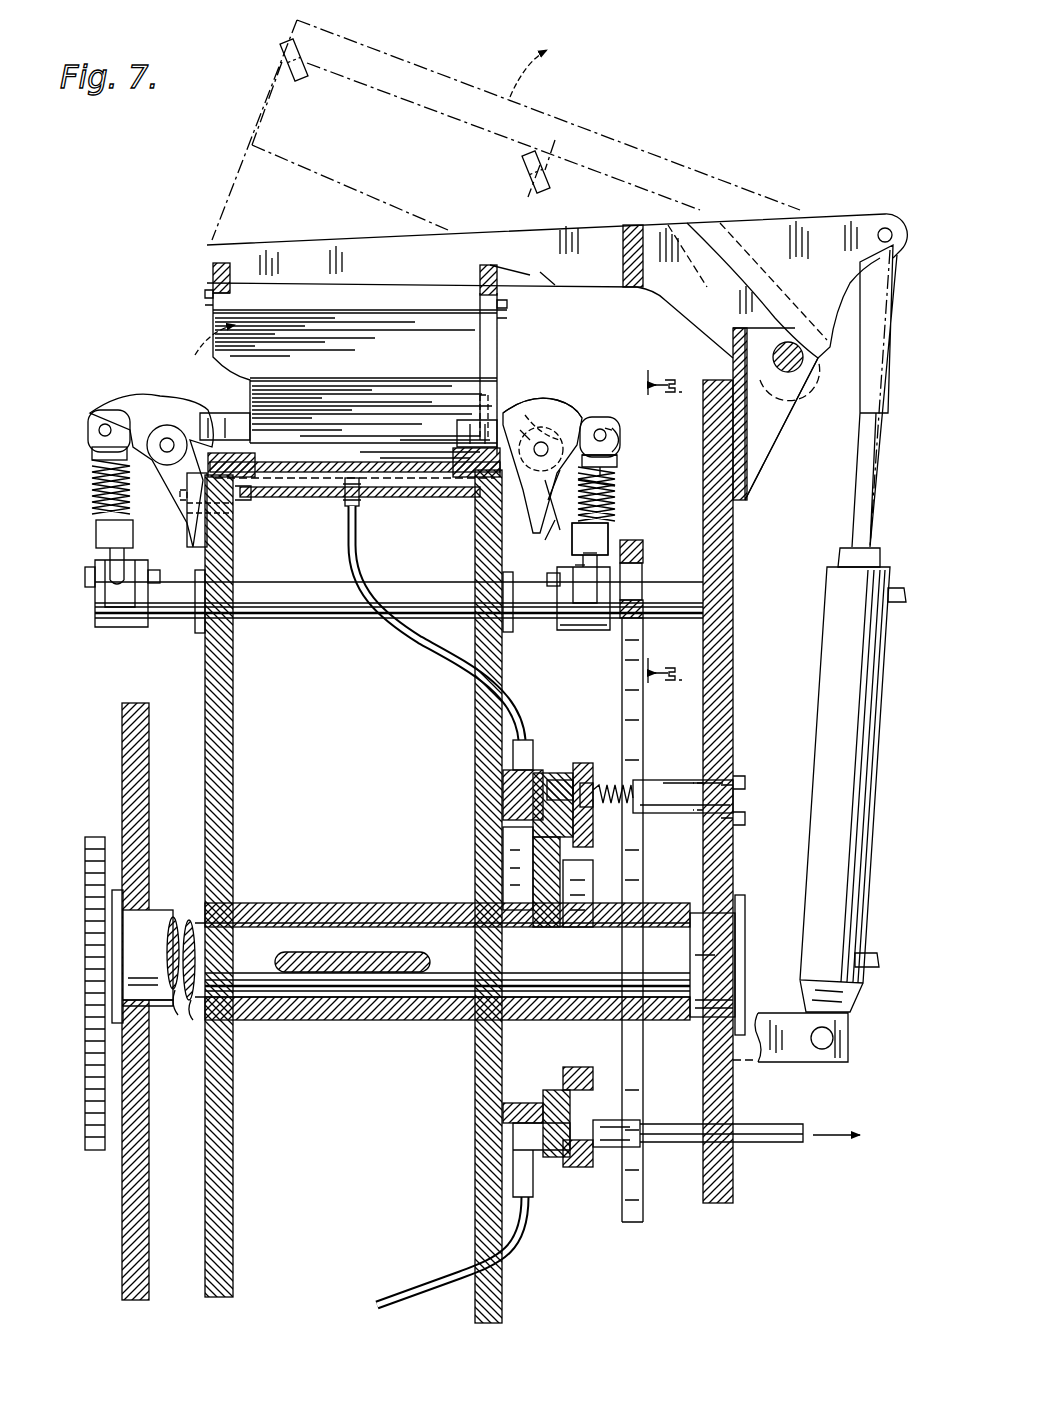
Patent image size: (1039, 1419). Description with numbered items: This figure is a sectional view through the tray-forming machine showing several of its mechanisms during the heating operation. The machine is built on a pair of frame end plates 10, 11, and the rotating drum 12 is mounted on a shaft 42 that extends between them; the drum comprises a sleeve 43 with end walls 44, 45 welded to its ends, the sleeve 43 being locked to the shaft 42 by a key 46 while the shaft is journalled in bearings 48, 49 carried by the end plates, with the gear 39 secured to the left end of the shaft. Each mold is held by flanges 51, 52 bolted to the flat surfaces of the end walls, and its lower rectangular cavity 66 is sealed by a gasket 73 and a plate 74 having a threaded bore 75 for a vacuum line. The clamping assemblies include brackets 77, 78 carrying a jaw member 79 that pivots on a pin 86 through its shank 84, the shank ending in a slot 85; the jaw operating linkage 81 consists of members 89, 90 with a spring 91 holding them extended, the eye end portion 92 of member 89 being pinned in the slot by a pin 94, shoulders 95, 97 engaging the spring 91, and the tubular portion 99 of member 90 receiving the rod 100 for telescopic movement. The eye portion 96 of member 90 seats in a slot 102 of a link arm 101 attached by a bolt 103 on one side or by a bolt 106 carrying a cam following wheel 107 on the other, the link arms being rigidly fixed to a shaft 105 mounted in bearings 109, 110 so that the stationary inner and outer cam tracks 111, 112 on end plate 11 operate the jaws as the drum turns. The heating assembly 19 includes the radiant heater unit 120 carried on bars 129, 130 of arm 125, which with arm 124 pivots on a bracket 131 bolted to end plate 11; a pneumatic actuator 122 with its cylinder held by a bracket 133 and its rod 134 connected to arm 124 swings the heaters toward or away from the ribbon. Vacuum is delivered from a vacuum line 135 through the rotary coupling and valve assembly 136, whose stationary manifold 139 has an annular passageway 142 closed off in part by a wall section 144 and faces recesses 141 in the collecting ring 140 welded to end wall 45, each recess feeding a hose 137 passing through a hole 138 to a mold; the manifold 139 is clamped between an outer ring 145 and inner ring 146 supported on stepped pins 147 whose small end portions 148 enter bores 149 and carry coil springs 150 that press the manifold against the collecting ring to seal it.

The frame end plate 10 is at (130, 758).
The frame end plate 11 is at (725, 660).
The rotating drum 12 is at (200, 688).
The heating assembly 19 is at (447, 78).
The gear 39 is at (82, 848).
The shaft 42 is at (557, 966).
The sleeve 43 is at (280, 905).
The end wall 44 is at (210, 750).
The end wall 45 is at (478, 722).
The key 46 is at (405, 955).
The bearing 48 is at (148, 918).
The bearing 49 is at (718, 950).
The flange 51 is at (162, 470).
The flange 52 is at (540, 452).
The rectangular cavity 66 is at (326, 480).
The gasket 73 is at (255, 498).
The plate 74 is at (298, 486).
The threaded bore 75 is at (362, 500).
The bracket 77 is at (575, 510).
The bracket 78 is at (195, 530).
The jaw member 79 is at (203, 378).
The jaw operating linkage 81 is at (98, 478).
The shank 84 is at (565, 408).
The slot 85 is at (590, 430).
The pin 86 is at (540, 445).
The linkage member 89 is at (622, 438).
The linkage member 90 is at (612, 545).
The spring 91 is at (618, 490).
The eye end portion 92 is at (615, 432).
The pin 94 is at (604, 430).
The shoulder 95 is at (622, 462).
The eye portion 96 is at (578, 568).
The shoulder 97 is at (582, 555).
The tubular portion 99 is at (580, 480).
The rod 100 is at (618, 478).
The link arm 101 is at (118, 628).
The slot 102 is at (590, 632).
The bolt 103 is at (88, 578).
The shaft 105 is at (322, 614).
The bolt 106 is at (548, 582).
The cam following wheel 107 is at (634, 583).
The bearing 109 is at (196, 633).
The bearing 110 is at (513, 615).
The inner cam track 111 is at (645, 620).
The outer cam track 112 is at (636, 548).
The radiant electric heater unit 120 is at (368, 356).
The pneumatic actuator 122 is at (826, 632).
The arm 124 is at (822, 232).
The arm 125 is at (655, 138).
The bar 129 is at (208, 286).
The bar 130 is at (505, 272).
The bracket 131 is at (770, 440).
The bracket 133 is at (840, 1044).
The rod 134 is at (856, 482).
The vacuum line 135 is at (792, 1150).
The rotary coupling and valve assembly 136 is at (585, 1170).
The hose 137 is at (408, 634).
The hole 138 is at (480, 682).
The manifold 139 is at (560, 825).
The collecting ring 140 is at (535, 823).
The recess 141 is at (518, 805).
The annular passageway 142 is at (548, 770).
The wall section 144 is at (515, 795).
The outer ring 145 is at (578, 770).
The inner ring 146 is at (515, 880).
The stepped pin 147 is at (683, 795).
The small diameter end portion 148 is at (605, 786).
The bore 149 is at (580, 780).
The coil spring 150 is at (645, 778).